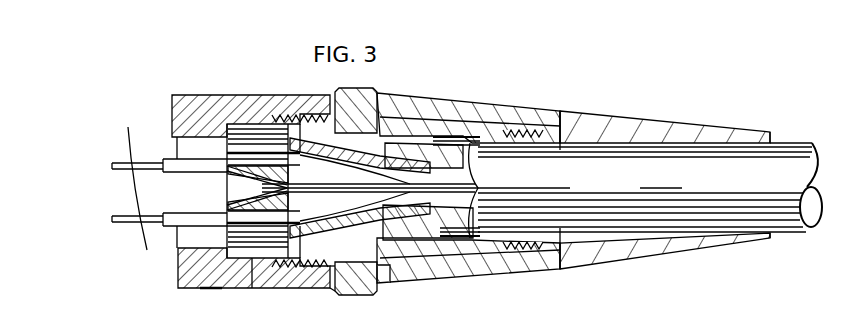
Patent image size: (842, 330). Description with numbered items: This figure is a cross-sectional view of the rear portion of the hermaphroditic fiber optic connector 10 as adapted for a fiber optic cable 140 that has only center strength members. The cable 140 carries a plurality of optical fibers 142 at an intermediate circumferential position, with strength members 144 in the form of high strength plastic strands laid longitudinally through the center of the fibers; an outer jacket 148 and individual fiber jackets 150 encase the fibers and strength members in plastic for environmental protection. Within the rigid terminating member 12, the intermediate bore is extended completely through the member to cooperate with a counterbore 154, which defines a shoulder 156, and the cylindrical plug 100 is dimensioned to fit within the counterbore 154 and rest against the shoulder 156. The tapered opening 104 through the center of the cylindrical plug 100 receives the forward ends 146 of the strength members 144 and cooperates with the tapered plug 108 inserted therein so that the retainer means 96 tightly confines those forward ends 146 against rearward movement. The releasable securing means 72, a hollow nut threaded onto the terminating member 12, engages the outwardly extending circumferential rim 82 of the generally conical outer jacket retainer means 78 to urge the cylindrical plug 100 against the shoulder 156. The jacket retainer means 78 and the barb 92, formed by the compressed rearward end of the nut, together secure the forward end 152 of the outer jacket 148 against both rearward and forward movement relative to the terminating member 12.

The hermaphroditic fiber optic connector 10 is at (464, 64).
The rigid terminating member 12 is at (232, 93).
The releasable securing means 72 is at (362, 87).
The outer jacket retainer means 78 is at (368, 147).
The outwardly extending circumferential rim 82 is at (313, 288).
The second barb 92 is at (566, 142).
The retainer means for strength members 96 is at (270, 127).
The cylindrical plug 100 is at (233, 146).
The tapered opening 104 is at (244, 214).
The tapered plug 108 is at (224, 191).
The fiber optic cable 140 is at (793, 139).
The optical fibers 142 is at (186, 186).
The strength members 144 is at (466, 128).
The forward ends of the strength members 146 is at (256, 172).
The outer jacket 148 is at (456, 248).
The individual fiber jackets 150 is at (164, 202).
The forward end of the outer jacket 152 is at (390, 258).
The counterbore 154 is at (253, 289).
The shoulder 156 is at (212, 289).